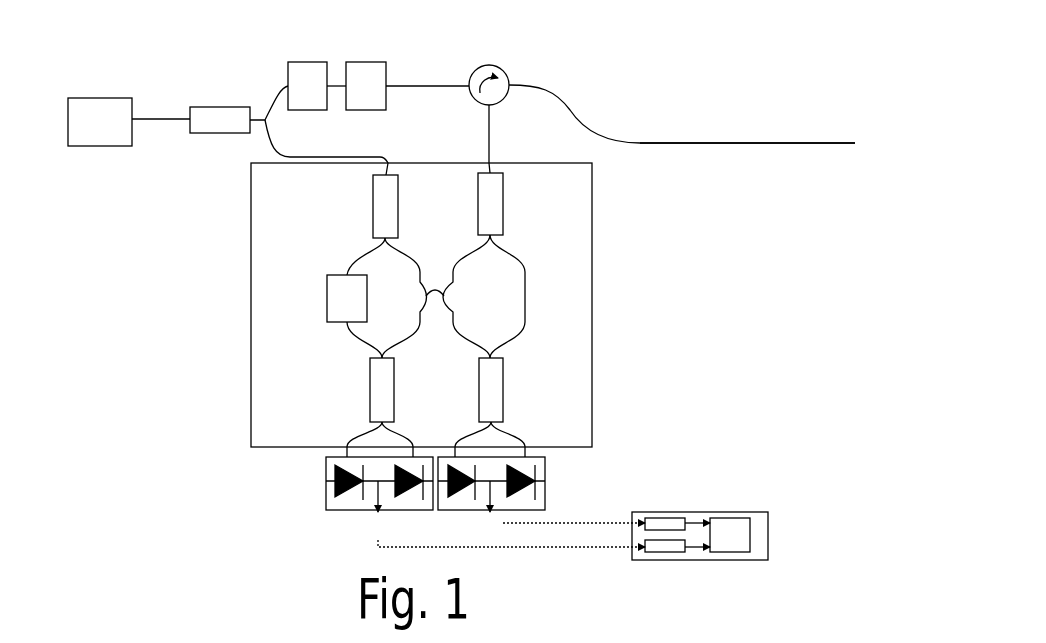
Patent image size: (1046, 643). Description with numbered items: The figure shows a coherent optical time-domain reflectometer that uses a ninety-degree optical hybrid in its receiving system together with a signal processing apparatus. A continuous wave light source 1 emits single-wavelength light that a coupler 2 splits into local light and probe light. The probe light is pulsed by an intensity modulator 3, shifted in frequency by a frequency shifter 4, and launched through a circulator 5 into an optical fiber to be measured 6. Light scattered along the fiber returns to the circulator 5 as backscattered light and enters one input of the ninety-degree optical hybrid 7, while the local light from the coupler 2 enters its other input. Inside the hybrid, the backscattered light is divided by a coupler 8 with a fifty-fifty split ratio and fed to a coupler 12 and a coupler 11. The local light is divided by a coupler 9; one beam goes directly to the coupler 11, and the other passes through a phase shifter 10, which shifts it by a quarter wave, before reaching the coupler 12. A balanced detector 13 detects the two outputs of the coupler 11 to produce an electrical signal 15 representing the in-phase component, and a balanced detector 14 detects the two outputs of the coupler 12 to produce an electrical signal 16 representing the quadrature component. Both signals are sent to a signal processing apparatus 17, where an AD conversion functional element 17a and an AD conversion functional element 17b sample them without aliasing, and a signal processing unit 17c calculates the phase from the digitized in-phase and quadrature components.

The continuous wave (CW) light source 1 is at (100, 125).
The coupler 2 is at (225, 125).
The intensity modulator 3 is at (305, 72).
The frequency shifter 4 is at (365, 72).
The circulator 5 is at (509, 66).
The optical fiber to be measured 6 is at (707, 143).
The 90-degree optical hybrid 7 is at (592, 287).
The coupler 8 is at (497, 202).
The coupler 9 is at (376, 210).
The phase shifter 10 is at (350, 300).
The coupler 11 is at (506, 387).
The coupler 12 is at (374, 392).
The balanced detector 13 is at (548, 495).
The balanced detector 14 is at (326, 497).
The electrical signal 15 is at (563, 507).
The electrical signal 16 is at (508, 514).
The signal processing apparatus 17 is at (725, 512).
The AD conversion functional element 17a is at (667, 527).
The AD conversion functional element 17b is at (667, 545).
The signal processing unit 17c is at (738, 532).